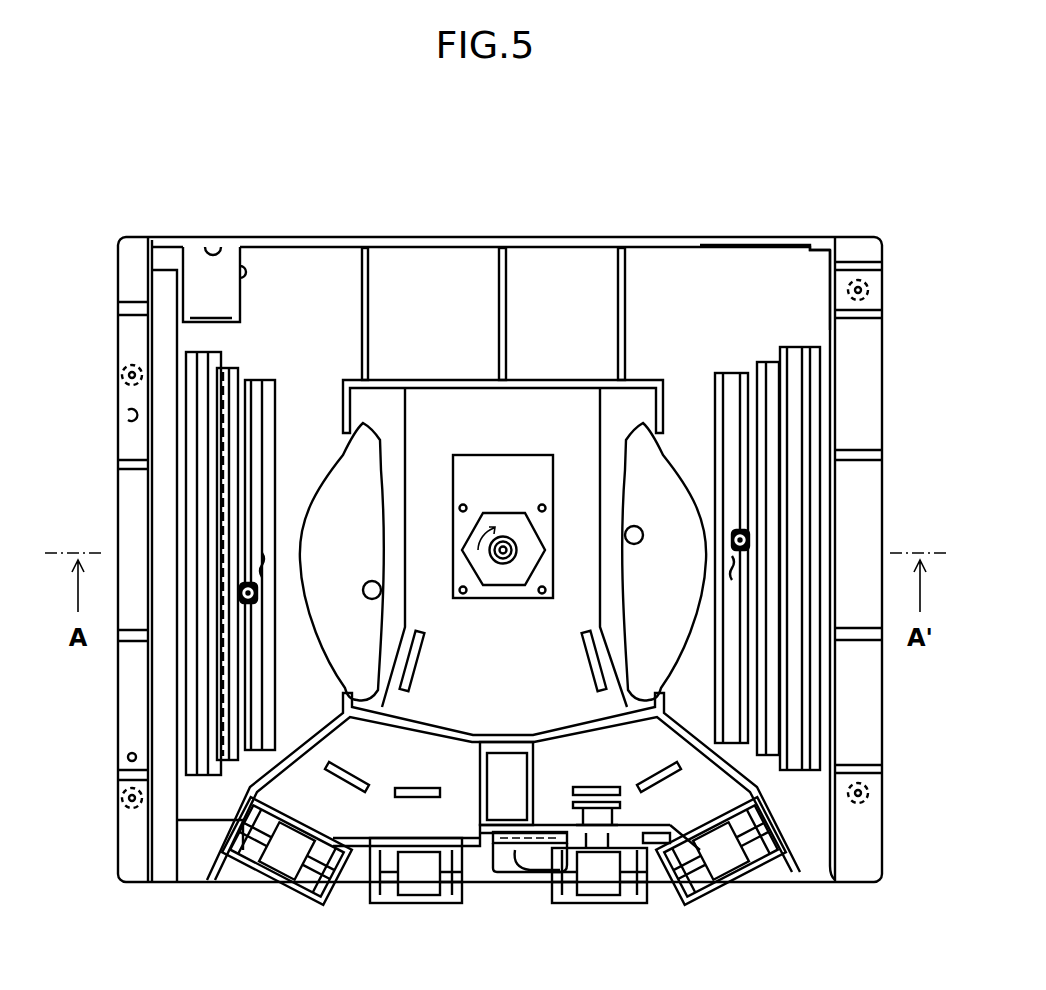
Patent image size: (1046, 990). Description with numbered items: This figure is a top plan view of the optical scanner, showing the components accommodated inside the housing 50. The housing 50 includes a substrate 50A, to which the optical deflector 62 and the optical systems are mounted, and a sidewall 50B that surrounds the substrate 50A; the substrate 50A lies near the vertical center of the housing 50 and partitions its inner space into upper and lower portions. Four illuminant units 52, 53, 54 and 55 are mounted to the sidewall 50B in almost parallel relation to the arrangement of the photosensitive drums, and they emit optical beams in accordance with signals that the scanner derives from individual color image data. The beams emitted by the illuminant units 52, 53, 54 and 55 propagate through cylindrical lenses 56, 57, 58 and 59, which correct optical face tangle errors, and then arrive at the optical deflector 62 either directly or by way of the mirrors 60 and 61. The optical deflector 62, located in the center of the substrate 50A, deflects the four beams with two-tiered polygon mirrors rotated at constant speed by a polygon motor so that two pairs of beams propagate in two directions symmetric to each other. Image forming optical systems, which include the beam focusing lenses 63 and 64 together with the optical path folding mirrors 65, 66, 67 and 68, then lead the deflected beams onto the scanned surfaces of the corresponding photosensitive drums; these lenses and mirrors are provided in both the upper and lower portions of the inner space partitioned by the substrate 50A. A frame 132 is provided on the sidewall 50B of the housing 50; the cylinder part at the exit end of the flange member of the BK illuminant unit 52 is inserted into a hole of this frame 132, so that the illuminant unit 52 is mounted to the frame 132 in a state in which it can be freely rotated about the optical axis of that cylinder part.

The housing 50 is at (883, 380).
The substrate 50A is at (713, 262).
The sidewall 50B is at (447, 238).
The illuminant unit 52 is at (722, 862).
The illuminant unit 53 is at (597, 880).
The illuminant unit 54 is at (416, 880).
The illuminant unit 55 is at (294, 862).
The cylindrical lens 56 is at (654, 770).
The cylindrical lens 57 is at (586, 787).
The cylindrical lens 58 is at (425, 788).
The cylindrical lens 59 is at (350, 773).
The mirror 60 is at (593, 677).
The mirror 61 is at (422, 653).
The optical deflector 62 is at (468, 533).
The beam focusing lens 63 is at (660, 452).
The beam focusing lens 64 is at (330, 455).
The optical path folding mirror 65 is at (762, 362).
The optical path folding mirror 66 is at (228, 368).
The optical path folding mirror 67 is at (803, 347).
The optical path folding mirror 68 is at (199, 348).
The frame 132 is at (505, 868).